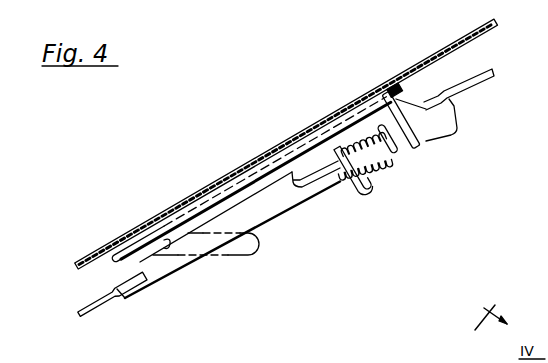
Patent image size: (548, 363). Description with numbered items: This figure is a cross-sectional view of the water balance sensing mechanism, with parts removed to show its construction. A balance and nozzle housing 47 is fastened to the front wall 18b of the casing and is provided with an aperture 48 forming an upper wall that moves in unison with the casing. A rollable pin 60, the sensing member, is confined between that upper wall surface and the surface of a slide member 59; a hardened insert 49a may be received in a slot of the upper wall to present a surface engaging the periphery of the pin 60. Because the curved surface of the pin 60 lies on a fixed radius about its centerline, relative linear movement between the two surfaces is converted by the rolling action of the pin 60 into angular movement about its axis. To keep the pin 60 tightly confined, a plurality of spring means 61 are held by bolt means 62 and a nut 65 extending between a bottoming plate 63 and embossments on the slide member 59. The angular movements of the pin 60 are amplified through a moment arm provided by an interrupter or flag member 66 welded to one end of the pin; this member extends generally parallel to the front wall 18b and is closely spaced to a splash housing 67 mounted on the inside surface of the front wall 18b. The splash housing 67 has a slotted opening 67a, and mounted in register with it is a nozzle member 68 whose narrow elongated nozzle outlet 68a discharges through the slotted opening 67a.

The splash housing 67 is at (250, 176).
The slotted opening 67a is at (141, 230).
The interrupter or flag member 66 is at (163, 232).
The aperture 48 is at (300, 176).
The balance and nozzle housing 47 is at (283, 224).
The front wall 18b is at (101, 305).
The nozzle member 68 is at (247, 256).
The nozzle outlet 68a is at (167, 247).
The nut 65 is at (312, 191).
The bolt means 62 is at (377, 172).
The bottoming plate 63 is at (348, 193).
The spring means 61 is at (392, 153).
The slide member 59 is at (411, 150).
The rollable pin 60 is at (428, 148).
The hardened insert 49a is at (440, 137).